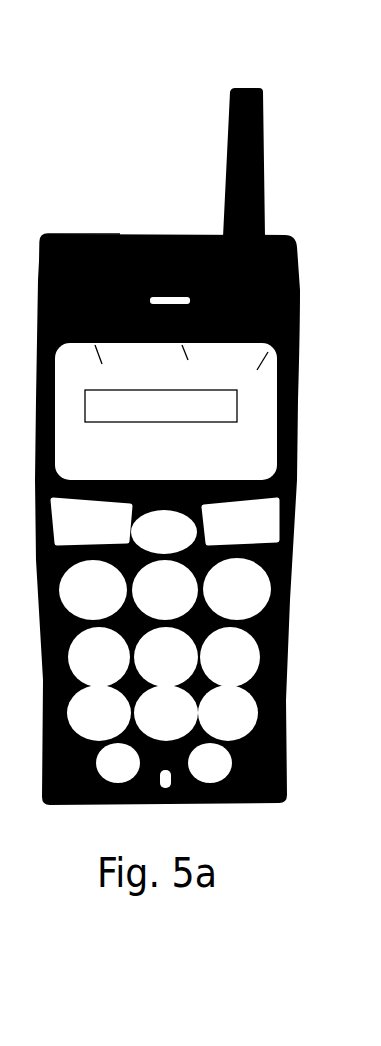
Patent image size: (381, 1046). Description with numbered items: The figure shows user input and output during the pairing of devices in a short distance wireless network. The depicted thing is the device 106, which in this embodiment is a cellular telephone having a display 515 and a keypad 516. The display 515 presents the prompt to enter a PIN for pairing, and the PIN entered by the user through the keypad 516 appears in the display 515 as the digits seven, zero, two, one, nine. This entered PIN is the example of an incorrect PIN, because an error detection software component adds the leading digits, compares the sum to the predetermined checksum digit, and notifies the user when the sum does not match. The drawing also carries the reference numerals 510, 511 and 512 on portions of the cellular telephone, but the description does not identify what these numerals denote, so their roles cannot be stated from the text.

The device 106 is at (188, 185).
The mobile telephone 510 is at (131, 222).
The housing 511 is at (58, 233).
The display showing PIN for pairing 512 is at (188, 407).
The display 515 is at (302, 292).
The keypad 516 is at (255, 603).